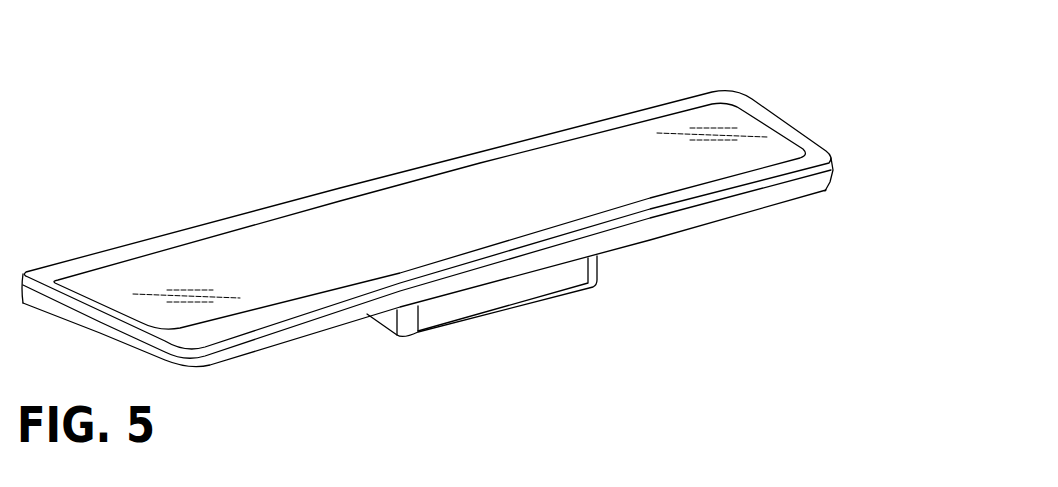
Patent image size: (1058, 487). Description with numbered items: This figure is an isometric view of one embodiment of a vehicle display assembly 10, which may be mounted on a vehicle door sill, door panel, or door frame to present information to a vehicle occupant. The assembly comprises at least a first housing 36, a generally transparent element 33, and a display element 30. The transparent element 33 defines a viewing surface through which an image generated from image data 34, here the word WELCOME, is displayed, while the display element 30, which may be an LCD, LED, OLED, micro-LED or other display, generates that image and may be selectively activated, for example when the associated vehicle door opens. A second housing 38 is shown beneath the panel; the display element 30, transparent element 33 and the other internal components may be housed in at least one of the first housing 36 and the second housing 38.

The vehicle display assembly 10 is at (757, 82).
The display element 30 is at (230, 253).
The transparent element 33 is at (602, 153).
The image data 34 is at (414, 201).
The first housing 36 is at (818, 183).
The second housing 38 is at (570, 277).